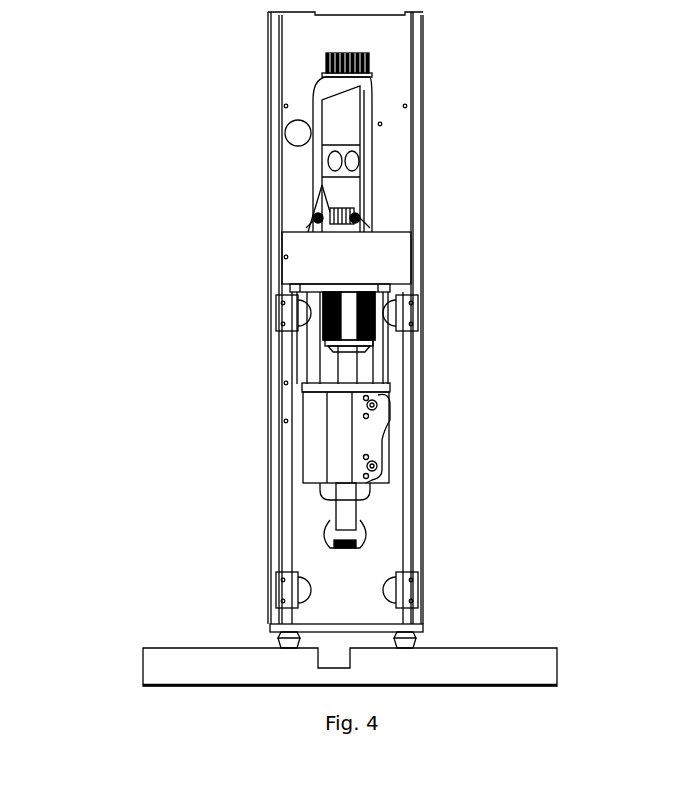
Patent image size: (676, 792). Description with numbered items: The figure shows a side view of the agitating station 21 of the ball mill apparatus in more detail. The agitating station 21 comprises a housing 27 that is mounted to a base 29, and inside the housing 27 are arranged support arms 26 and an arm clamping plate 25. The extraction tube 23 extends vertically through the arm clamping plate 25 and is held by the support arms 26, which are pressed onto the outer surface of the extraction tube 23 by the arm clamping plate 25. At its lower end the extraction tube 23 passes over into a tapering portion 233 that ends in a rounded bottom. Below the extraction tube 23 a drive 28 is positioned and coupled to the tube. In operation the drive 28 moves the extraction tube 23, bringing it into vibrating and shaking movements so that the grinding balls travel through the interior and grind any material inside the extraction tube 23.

The agitating station 21 is at (236, 96).
The extraction tube 23 is at (350, 105).
The arm clamping plate 25 is at (390, 262).
The support arms 26 is at (322, 185).
The housing 27 is at (276, 421).
The drive 28 is at (368, 442).
The base 29 is at (165, 665).
The tapering portion 233 is at (414, 378).